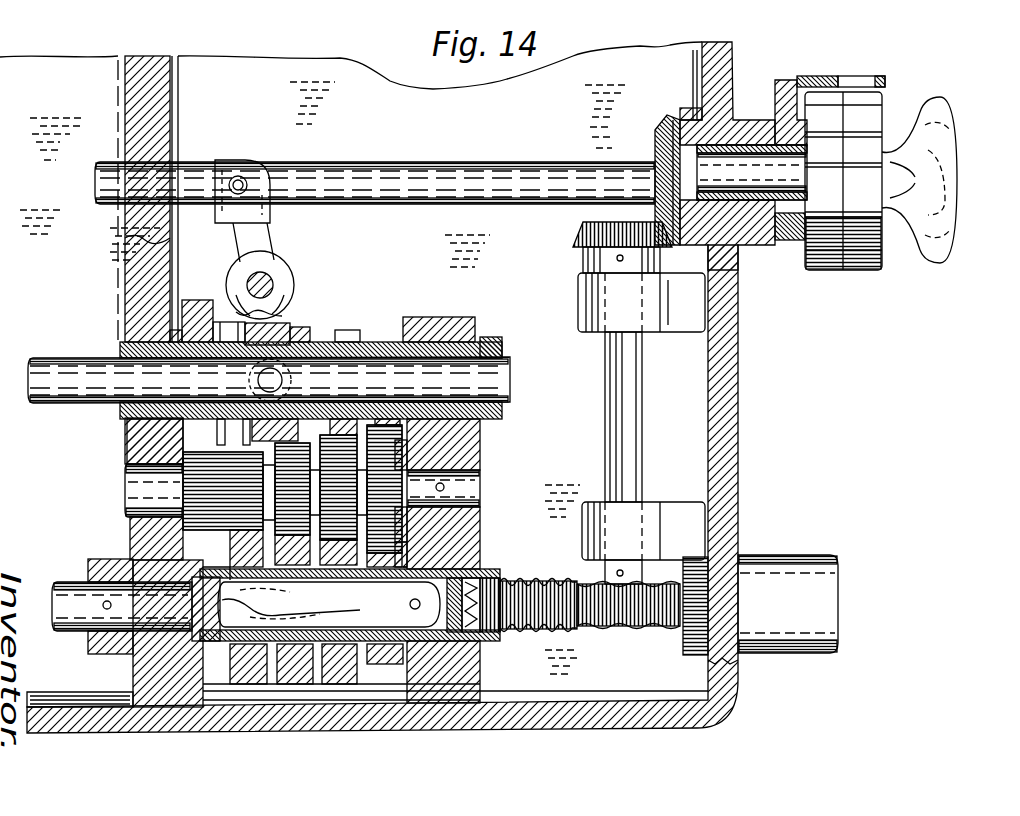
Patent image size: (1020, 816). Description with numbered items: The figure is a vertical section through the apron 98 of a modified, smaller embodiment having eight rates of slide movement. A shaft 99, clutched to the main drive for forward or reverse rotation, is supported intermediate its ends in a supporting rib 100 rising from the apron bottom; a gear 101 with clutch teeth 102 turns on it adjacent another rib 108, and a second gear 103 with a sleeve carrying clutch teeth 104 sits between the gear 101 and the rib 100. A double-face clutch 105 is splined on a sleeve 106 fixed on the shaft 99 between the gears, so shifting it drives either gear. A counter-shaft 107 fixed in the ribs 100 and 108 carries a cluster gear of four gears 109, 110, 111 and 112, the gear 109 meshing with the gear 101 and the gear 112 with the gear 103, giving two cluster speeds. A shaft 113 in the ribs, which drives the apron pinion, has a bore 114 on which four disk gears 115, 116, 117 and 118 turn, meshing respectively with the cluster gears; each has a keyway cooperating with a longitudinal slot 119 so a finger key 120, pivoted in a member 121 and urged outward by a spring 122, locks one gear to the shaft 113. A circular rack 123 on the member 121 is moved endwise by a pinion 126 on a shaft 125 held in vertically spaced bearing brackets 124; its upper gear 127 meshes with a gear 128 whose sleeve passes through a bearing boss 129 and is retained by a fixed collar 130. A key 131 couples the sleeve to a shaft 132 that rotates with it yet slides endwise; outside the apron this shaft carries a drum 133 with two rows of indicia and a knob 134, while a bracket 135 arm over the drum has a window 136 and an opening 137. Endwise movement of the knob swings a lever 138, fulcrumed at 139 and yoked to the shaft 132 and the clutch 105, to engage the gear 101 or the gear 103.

The apron 98 is at (728, 460).
The shaft 99 is at (493, 369).
The supporting rib 100 is at (450, 455).
The gear 101 is at (195, 298).
The clutch teeth 102 is at (220, 428).
The second gear 103 is at (440, 318).
The clutch teeth 104 is at (300, 340).
The double-face clutch 105 is at (292, 326).
The sleeve 106 is at (226, 322).
The counter-shaft 107 is at (468, 486).
The rib 108 is at (138, 455).
The gear of cluster gear 109 is at (188, 509).
The gear of cluster gear 110 is at (203, 489).
The gear of cluster gear 111 is at (418, 460).
The gear of cluster gear 112 is at (403, 520).
The shaft 113 is at (82, 599).
The bore 114 is at (123, 658).
The gear 115 is at (243, 690).
The gear 116 is at (283, 690).
The gear 117 is at (326, 690).
The gear 118 is at (381, 690).
The longitudinal slot 119 is at (408, 540).
The finger key 120 is at (320, 614).
The member 121 is at (148, 634).
The spring 122 is at (258, 614).
The circular rack 123 is at (538, 630).
The bearing brackets 124 is at (665, 300).
The shaft 125 is at (608, 437).
The pinion 126 is at (626, 630).
The gear 127 is at (573, 230).
The gear 128 is at (658, 128).
The bearing boss 129 is at (688, 108).
The fixed collar 130 is at (771, 247).
The key 131 is at (725, 160).
The shaft 132 is at (466, 165).
The drum 133 is at (878, 103).
The knob 134 is at (943, 113).
The bracket 135 is at (777, 80).
The window 136 is at (852, 76).
The opening 137 is at (814, 76).
The lever 138 is at (262, 238).
The fulcrum 139 is at (278, 284).